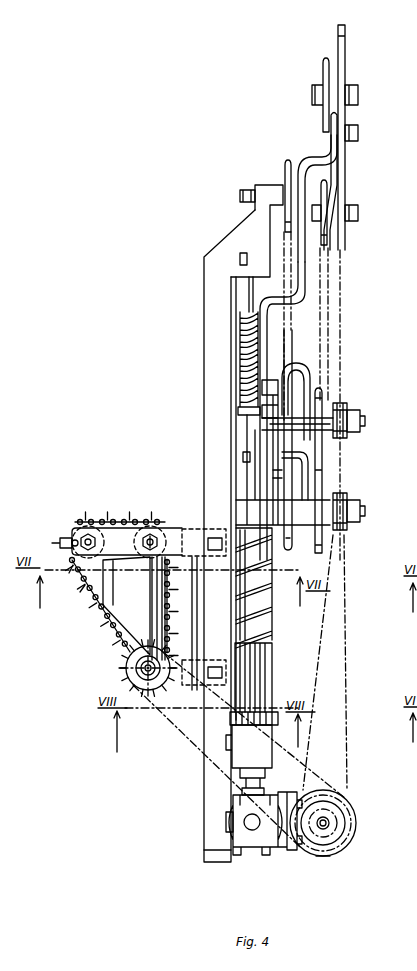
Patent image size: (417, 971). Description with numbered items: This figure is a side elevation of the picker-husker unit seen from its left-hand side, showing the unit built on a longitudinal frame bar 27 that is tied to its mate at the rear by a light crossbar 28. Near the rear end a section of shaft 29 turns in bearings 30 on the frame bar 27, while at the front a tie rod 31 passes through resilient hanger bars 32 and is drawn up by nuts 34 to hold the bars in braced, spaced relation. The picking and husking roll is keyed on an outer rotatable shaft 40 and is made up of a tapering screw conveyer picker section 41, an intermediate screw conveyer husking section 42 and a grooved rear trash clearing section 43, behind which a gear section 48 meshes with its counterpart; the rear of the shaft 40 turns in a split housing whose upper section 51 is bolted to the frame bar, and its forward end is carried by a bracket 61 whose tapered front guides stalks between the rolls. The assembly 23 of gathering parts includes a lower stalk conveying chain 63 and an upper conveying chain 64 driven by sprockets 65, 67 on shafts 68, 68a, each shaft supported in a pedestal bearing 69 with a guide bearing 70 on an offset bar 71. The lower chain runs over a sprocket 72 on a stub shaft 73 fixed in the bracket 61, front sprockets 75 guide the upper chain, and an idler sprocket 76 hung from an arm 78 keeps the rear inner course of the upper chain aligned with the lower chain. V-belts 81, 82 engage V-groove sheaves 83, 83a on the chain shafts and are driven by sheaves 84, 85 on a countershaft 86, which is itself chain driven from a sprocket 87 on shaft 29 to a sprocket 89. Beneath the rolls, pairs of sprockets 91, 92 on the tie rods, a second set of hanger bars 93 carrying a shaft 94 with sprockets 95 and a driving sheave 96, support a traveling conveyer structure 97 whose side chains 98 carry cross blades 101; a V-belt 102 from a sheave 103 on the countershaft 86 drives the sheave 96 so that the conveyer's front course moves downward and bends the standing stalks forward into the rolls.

The control linkage assembly 23 is at (306, 122).
The frame bar 27 is at (205, 378).
The crossbar 28 is at (214, 862).
The shaft 29 is at (244, 822).
The bearing 30 is at (238, 831).
The tie rod 31 is at (150, 534).
The hanger bar 32 is at (194, 528).
The nut 34 is at (127, 542).
The outer rotatable shaft 40 is at (245, 294).
The screw conveyer picker section 41 is at (240, 350).
The screw conveyer husking section 42 is at (272, 614).
The trash clearing section 43 is at (273, 668).
The gear section 48 is at (277, 711).
The upper section 51 is at (270, 748).
The bracket 61 is at (243, 221).
The lower stalk conveying chain 63 is at (292, 350).
The upper conveying chain 64 is at (330, 283).
The sprocket 65 is at (294, 372).
The sprocket 67 is at (323, 398).
The shaft 68 is at (366, 512).
The shaft 68a is at (359, 429).
The pedestal bearing 69 is at (238, 508).
The guide bearing 70 is at (295, 532).
The bar 71 is at (346, 40).
The sprocket 72 is at (285, 167).
The stub shaft 73 is at (240, 195).
The sprocket 75 is at (322, 73).
The idler sprocket 76 is at (328, 236).
The arm 78 is at (339, 172).
The V-belt 81 is at (325, 662).
The V-belt 82 is at (344, 461).
The V-groove sheave 83 is at (348, 526).
The V-groove sheave 83a is at (348, 411).
The driving sheave 84 is at (352, 807).
The driving sheave 85 is at (323, 823).
The countershaft 86 is at (328, 830).
The sprocket 87 is at (250, 848).
The sprocket 89 is at (357, 829).
The sprocket 91 is at (143, 560).
The sprocket 92 is at (84, 521).
The hanger bar 93 is at (204, 660).
The shaft 94 is at (127, 669).
The sprocket 95 is at (144, 608).
The driving sheave 96 is at (152, 700).
The traveling conveyer structure 97 is at (117, 500).
The side chain 98 is at (103, 630).
The blade 101 is at (85, 603).
The V-belt 102 is at (192, 716).
The sheave 103 is at (323, 857).